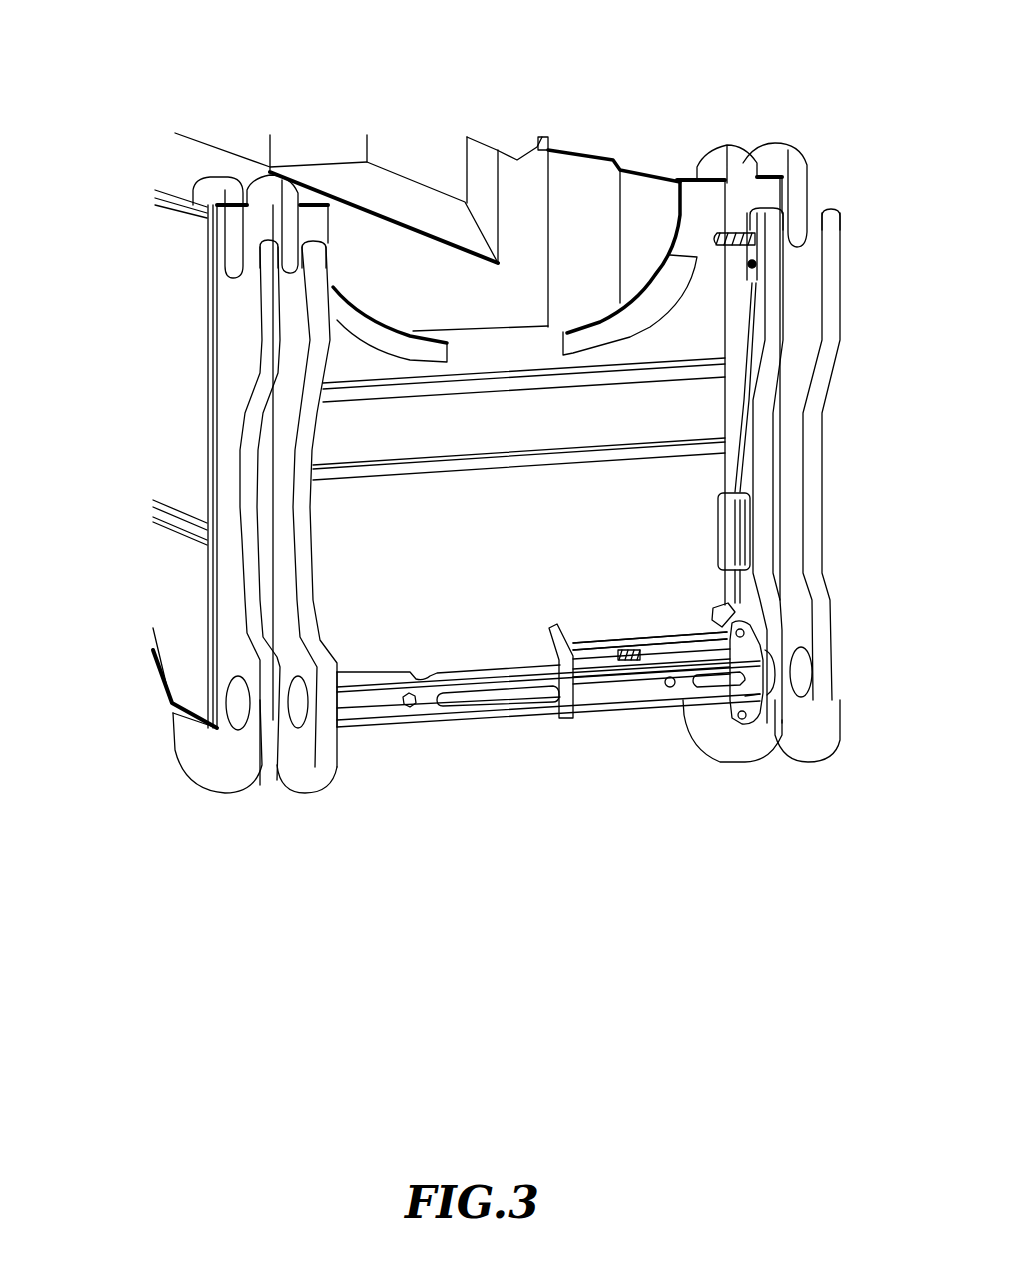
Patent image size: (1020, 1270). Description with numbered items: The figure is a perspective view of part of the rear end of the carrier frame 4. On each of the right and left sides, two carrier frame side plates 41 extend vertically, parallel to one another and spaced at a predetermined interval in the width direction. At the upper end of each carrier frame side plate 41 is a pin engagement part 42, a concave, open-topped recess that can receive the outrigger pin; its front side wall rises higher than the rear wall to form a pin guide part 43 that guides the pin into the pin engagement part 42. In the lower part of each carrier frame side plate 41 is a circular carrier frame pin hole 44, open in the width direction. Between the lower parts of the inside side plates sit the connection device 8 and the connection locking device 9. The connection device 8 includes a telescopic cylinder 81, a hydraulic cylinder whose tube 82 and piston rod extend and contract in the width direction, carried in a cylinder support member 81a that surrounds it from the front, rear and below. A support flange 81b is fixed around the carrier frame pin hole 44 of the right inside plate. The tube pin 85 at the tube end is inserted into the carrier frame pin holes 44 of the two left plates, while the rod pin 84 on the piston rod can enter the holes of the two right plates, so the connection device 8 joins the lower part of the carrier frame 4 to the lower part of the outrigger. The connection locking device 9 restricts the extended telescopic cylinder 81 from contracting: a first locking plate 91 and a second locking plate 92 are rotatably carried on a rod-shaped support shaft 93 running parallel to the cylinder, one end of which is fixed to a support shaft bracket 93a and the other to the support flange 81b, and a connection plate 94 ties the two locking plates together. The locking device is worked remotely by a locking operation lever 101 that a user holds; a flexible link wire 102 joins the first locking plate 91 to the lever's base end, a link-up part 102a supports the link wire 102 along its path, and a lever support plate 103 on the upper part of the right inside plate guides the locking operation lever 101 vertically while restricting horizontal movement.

The carrier frame 4 is at (501, 84).
The carrier frame side plate 41 is at (245, 375).
The pin engagement part 42 is at (235, 263).
The pin guide part 43 is at (237, 215).
The carrier frame pin hole 44 is at (230, 700).
The connection device 8 is at (586, 727).
The telescopic cylinder 81 is at (518, 675).
The cylinder support member 81a is at (460, 707).
The support flange 81b is at (753, 707).
The tube 82 is at (457, 677).
The rod pin 84 is at (710, 670).
The tube pin 85 is at (382, 680).
The connection locking device 9 is at (662, 626).
The first locking plate 91 is at (713, 607).
The second locking plate 92 is at (550, 625).
The support shaft 93 is at (650, 660).
The support shaft bracket 93a is at (557, 703).
The connection plate 94 is at (593, 632).
The locking operation lever 101 is at (730, 227).
The link wire 102 is at (750, 410).
The link-up part 102a is at (740, 530).
The lever support plate 103 is at (757, 280).